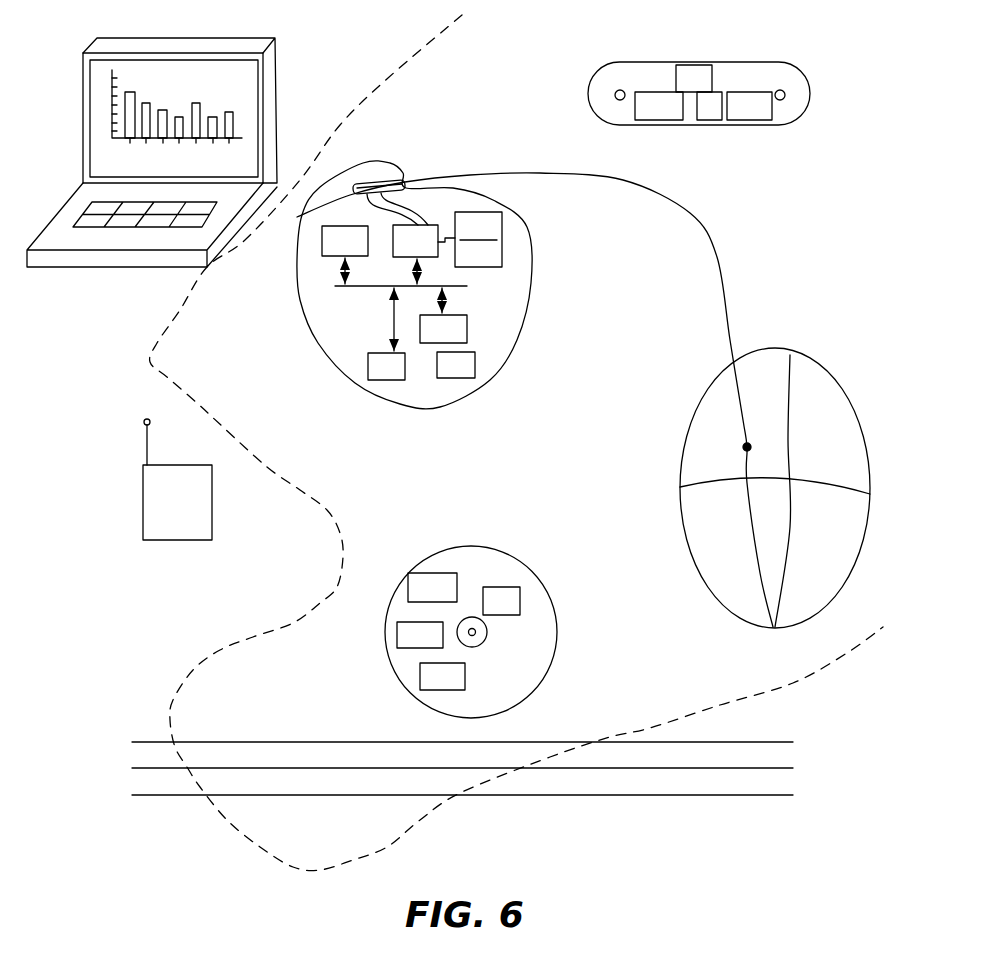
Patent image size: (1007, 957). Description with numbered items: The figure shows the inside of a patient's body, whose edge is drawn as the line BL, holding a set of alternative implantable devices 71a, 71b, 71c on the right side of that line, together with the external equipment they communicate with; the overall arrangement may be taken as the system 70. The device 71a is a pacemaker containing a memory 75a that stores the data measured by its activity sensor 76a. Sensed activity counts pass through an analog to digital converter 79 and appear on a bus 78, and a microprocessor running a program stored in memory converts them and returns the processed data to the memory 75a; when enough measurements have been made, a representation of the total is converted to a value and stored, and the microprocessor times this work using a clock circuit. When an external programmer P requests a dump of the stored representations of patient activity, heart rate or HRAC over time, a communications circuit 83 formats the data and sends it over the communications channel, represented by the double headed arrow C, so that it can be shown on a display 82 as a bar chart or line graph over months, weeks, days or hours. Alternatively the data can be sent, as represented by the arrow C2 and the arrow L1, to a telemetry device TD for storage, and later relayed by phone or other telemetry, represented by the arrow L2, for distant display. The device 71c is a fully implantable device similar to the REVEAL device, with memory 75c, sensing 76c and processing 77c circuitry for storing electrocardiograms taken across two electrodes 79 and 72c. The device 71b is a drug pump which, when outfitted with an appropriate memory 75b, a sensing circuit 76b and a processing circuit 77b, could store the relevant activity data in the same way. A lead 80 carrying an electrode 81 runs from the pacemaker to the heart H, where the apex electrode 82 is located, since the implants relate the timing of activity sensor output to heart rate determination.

The system 70 is at (437, 452).
The pacemaker 71a is at (353, 384).
The drug pump 71b is at (545, 688).
The implantable device 71c is at (705, 93).
The electrode 72c is at (783, 90).
The memory 75a is at (330, 256).
The memory 75b is at (407, 648).
The memory 75c is at (737, 120).
The sensor 76a is at (502, 237).
The sensor 76b is at (408, 588).
The sensor 76c is at (663, 120).
The processor 77b is at (428, 690).
The processor 77c is at (710, 120).
The bus 78 is at (373, 288).
The analog to digital converter 79 is at (440, 229).
The lead 80 is at (493, 172).
The lead electrode 81 is at (743, 450).
The display 82 is at (200, 89).
The communications circuit 83 is at (397, 380).
The programmer P is at (132, 258).
The heart H is at (712, 597).
The line BL is at (390, 82).
The telemetry device TD is at (177, 479).
The communications channel C is at (287, 240).
The arrow C2 is at (303, 362).
The arrow L1 is at (215, 417).
The arrow L2 is at (128, 488).